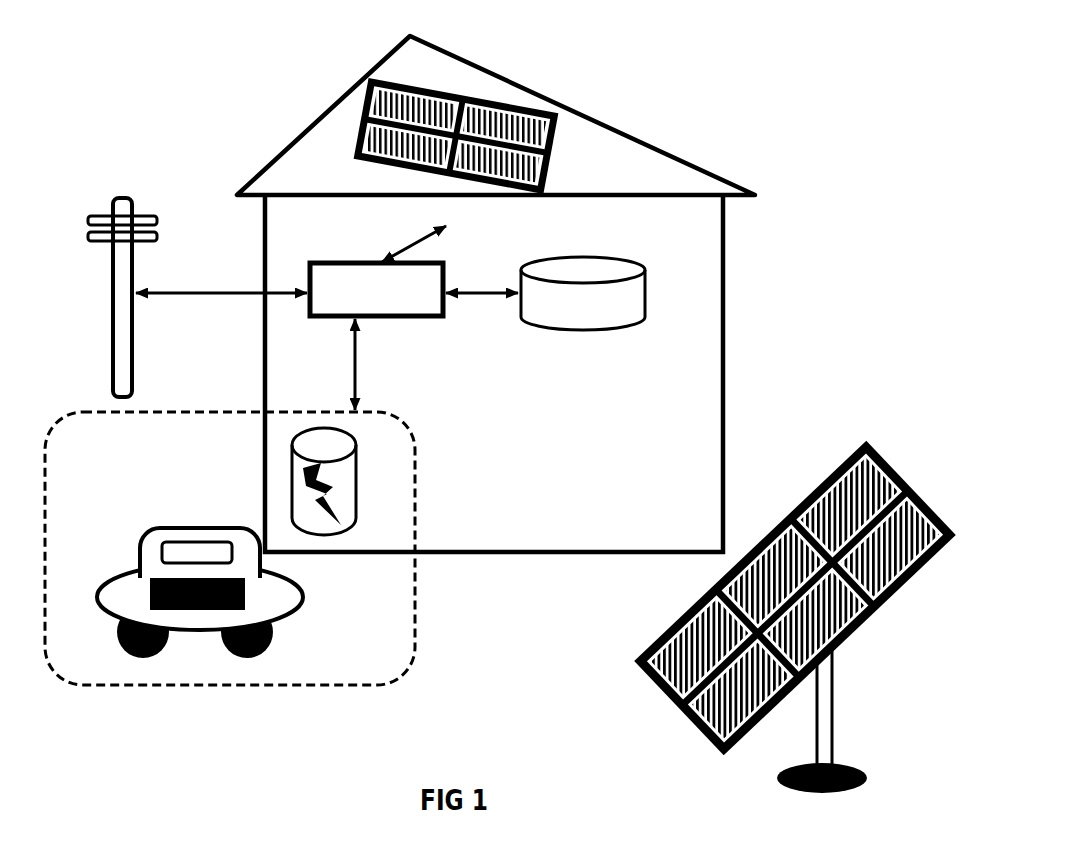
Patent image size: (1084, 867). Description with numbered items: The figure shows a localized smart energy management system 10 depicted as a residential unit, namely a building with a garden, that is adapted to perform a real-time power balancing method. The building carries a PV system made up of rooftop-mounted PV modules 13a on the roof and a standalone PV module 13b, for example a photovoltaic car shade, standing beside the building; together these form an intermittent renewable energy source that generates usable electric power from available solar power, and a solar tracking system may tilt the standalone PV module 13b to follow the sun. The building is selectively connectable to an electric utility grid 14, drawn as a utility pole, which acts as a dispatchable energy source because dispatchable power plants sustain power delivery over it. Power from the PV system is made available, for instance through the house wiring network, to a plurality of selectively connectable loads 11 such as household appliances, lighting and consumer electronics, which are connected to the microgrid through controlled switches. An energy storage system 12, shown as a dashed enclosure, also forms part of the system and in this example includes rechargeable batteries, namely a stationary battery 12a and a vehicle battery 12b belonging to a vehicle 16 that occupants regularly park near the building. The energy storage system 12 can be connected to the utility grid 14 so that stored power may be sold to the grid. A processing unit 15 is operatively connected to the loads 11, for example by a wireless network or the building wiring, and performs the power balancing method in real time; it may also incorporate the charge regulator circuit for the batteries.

The smart energy management system 10 is at (707, 114).
The loads 11 is at (580, 330).
The energy storage system 12 is at (337, 687).
The rechargeable battery 12a is at (343, 500).
The vehicle battery 12b is at (245, 595).
The rooftop-mounted PV modules 13a is at (357, 152).
The standalone PV module 13b is at (633, 659).
The electric utility grid 14 is at (140, 357).
The processing unit 15 is at (376, 289).
The vehicle 16 is at (165, 528).